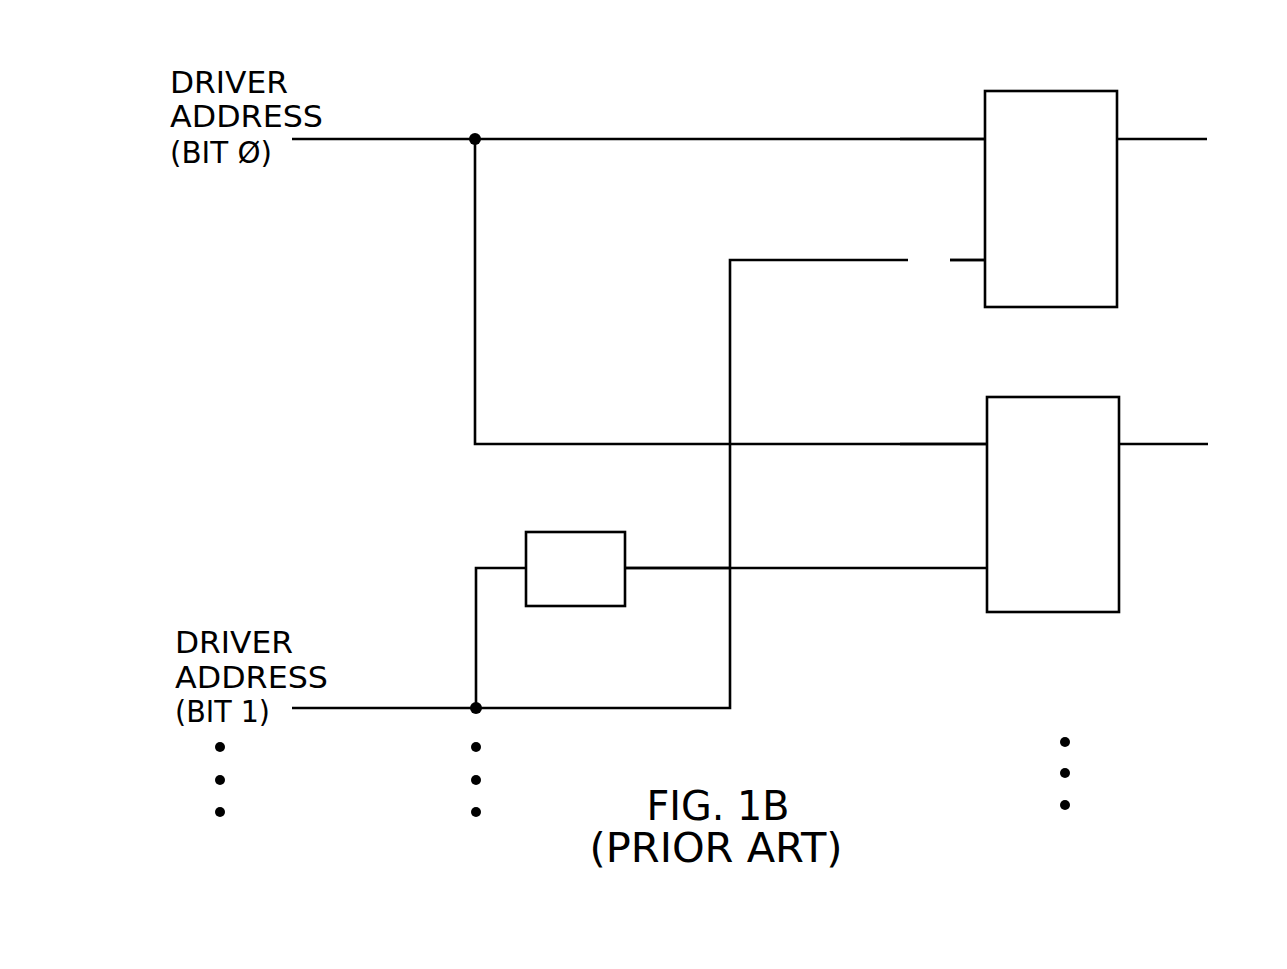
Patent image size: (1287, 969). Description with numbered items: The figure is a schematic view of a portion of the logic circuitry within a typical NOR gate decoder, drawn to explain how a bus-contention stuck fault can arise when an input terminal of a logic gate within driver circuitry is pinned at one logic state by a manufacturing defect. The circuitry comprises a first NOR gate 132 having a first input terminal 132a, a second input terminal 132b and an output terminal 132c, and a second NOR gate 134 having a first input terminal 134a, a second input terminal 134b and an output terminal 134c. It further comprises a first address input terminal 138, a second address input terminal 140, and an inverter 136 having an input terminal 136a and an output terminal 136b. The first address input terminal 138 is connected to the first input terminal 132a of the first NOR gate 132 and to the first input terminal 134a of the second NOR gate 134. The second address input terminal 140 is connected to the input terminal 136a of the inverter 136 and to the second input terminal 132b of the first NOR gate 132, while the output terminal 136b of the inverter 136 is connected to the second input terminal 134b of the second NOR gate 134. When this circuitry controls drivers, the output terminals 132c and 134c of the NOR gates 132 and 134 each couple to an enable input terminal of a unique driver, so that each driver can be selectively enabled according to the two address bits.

The first NOR gate 132 is at (1077, 91).
The first input terminal of the first NOR gate 132a is at (957, 139).
The second input terminal of the first NOR gate 132b is at (968, 260).
The output terminal of the first NOR gate 132c is at (1160, 139).
The second NOR gate 134 is at (1053, 612).
The first input terminal of the second NOR gate 134a is at (962, 444).
The second input terminal of the second NOR gate 134b is at (962, 568).
The output terminal of the second NOR gate 134c is at (1160, 444).
The inverter 136 is at (572, 532).
The input terminal of the inverter 136a is at (512, 568).
The output terminal of the inverter 136b is at (683, 543).
The first address input terminal 138 is at (333, 139).
The second address input terminal 140 is at (343, 708).